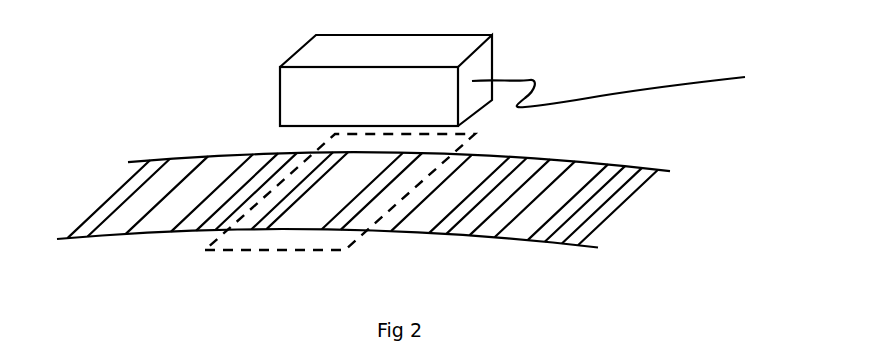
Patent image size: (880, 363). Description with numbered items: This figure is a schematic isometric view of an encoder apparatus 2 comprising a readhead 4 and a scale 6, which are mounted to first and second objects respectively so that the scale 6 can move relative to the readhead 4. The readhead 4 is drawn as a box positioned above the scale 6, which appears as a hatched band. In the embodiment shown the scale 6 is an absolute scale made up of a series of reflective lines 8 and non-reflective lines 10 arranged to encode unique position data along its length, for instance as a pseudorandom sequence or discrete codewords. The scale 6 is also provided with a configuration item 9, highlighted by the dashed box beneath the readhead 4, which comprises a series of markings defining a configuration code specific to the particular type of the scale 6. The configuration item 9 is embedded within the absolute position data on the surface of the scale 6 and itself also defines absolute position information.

The encoder apparatus 2 is at (476, 65).
The readhead 4 is at (300, 53).
The scale 6 is at (402, 193).
The reflective lines 8 is at (158, 167).
The configuration item 9 is at (240, 260).
The non-reflective lines 10 is at (124, 228).